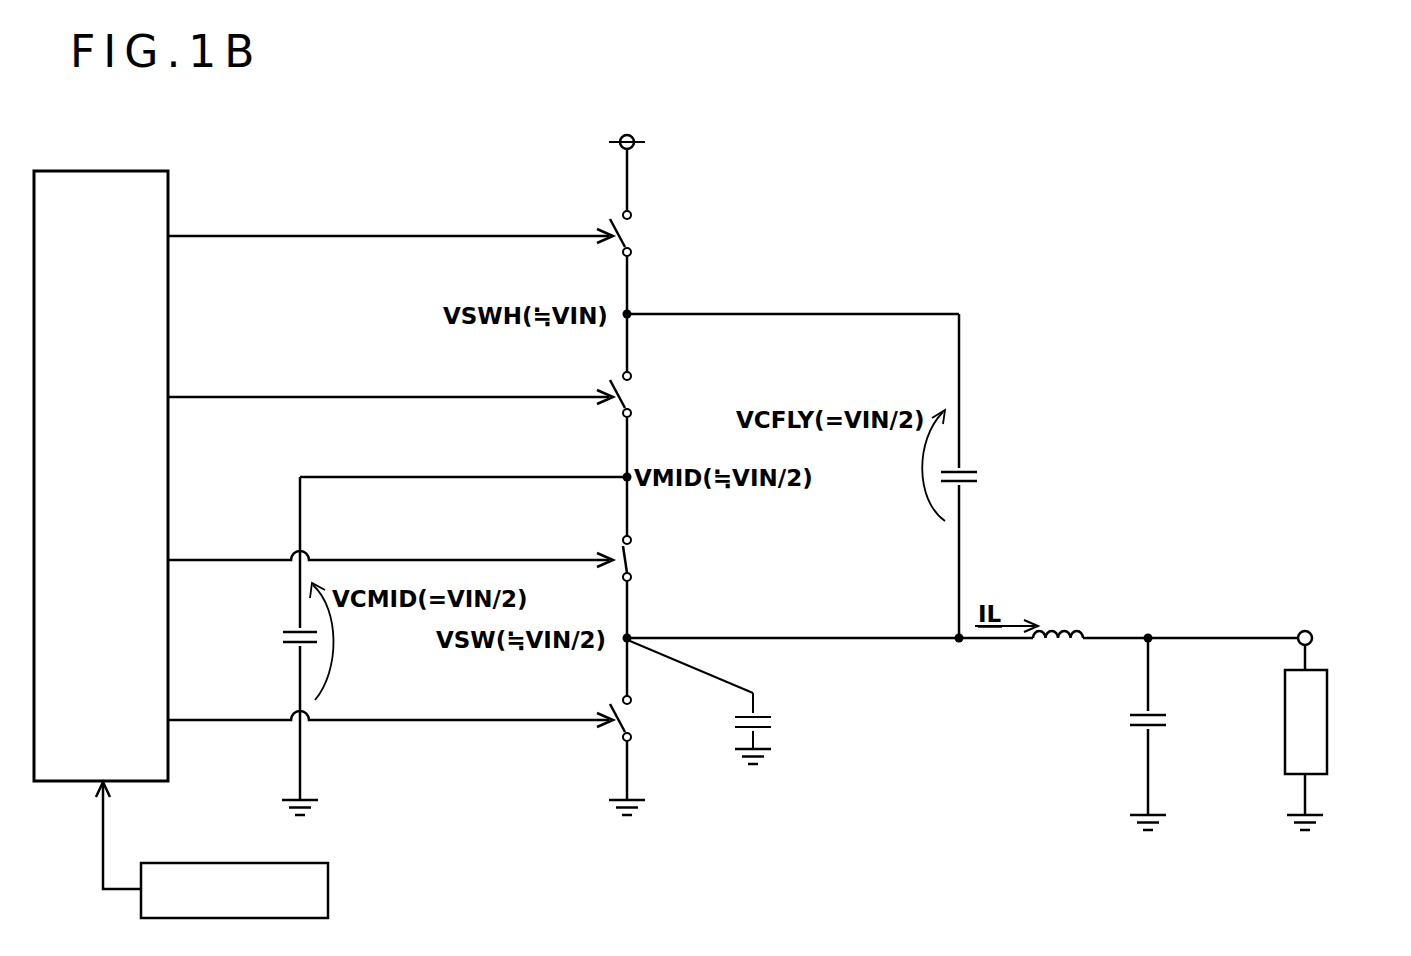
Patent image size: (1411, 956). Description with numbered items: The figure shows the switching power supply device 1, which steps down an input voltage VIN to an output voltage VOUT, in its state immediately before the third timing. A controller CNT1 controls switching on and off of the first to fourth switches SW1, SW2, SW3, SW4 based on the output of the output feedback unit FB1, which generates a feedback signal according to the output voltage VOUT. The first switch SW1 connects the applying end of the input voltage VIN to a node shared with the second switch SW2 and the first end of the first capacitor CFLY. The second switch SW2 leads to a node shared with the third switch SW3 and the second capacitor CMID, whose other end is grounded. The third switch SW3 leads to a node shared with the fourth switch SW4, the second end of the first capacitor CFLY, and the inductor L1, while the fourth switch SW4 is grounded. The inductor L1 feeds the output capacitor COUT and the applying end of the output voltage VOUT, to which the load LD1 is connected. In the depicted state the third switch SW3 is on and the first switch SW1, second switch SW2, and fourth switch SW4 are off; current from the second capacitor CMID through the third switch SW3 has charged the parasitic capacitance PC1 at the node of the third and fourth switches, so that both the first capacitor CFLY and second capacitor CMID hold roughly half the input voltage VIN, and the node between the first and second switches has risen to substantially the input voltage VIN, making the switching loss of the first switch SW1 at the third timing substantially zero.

The switching power supply device 1 is at (892, 108).
The controller CNT1 is at (101, 170).
The first switch SW1 is at (638, 227).
The second switch SW2 is at (638, 390).
The third switch SW3 is at (649, 552).
The fourth switch SW4 is at (638, 713).
The first capacitor CFLY is at (1005, 476).
The second capacitor CMID is at (250, 646).
The parasitic capacitance PC1 is at (742, 702).
The inductor L1 is at (1060, 627).
The output capacitor COUT is at (1199, 734).
The load LD1 is at (1346, 737).
The output feedback unit FB1 is at (252, 850).
The input voltage VIN is at (626, 126).
The output voltage VOUT is at (1303, 624).